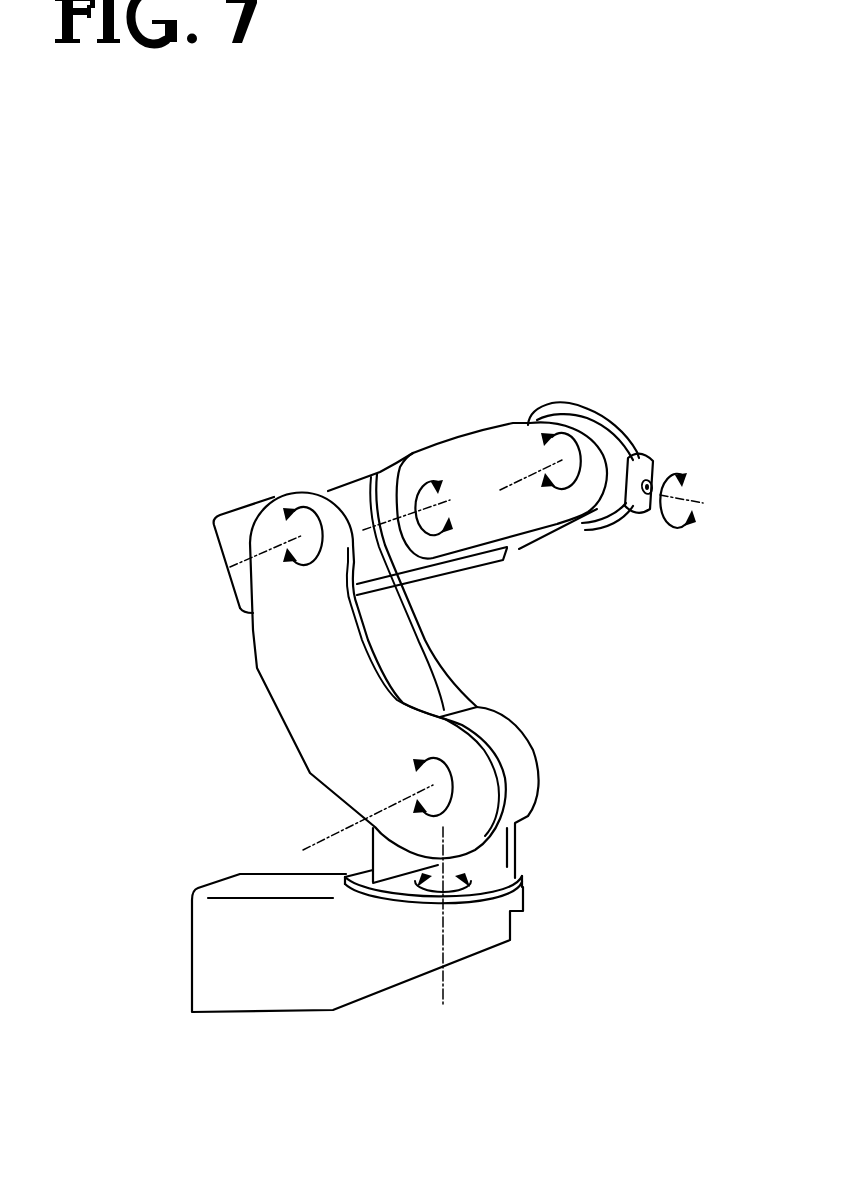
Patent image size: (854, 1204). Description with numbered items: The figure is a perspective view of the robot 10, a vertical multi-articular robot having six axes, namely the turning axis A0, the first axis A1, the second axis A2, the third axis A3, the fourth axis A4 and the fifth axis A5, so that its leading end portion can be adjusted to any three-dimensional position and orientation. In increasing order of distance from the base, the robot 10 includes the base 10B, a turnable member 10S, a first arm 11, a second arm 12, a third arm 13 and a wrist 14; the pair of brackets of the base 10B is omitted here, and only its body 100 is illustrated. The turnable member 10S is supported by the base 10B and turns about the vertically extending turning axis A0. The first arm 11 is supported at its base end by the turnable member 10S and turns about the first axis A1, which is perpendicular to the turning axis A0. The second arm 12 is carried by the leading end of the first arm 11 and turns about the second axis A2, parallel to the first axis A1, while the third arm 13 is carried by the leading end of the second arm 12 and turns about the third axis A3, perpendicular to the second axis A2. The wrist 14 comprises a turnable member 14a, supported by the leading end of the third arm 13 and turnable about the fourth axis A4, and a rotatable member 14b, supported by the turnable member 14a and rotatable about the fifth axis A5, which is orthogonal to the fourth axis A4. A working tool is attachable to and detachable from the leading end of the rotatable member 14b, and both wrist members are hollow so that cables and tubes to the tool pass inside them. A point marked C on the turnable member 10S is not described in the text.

The robot 10 is at (671, 637).
The turnable member 10S is at (520, 798).
The base 10B is at (357, 943).
The body 100 is at (230, 925).
The first arm 11 is at (303, 705).
The second arm 12 is at (237, 528).
The third arm 13 is at (503, 548).
The wrist 14 is at (705, 393).
The turnable member 14a is at (610, 420).
The rotatable member 14b is at (648, 460).
The turning axis A0 is at (445, 984).
The first axis A1 is at (382, 808).
The second axis A2 is at (278, 540).
The third axis A3 is at (413, 513).
The fourth axis A4 is at (540, 468).
The fifth axis A5 is at (703, 503).
The point C on shoulder C is at (472, 777).